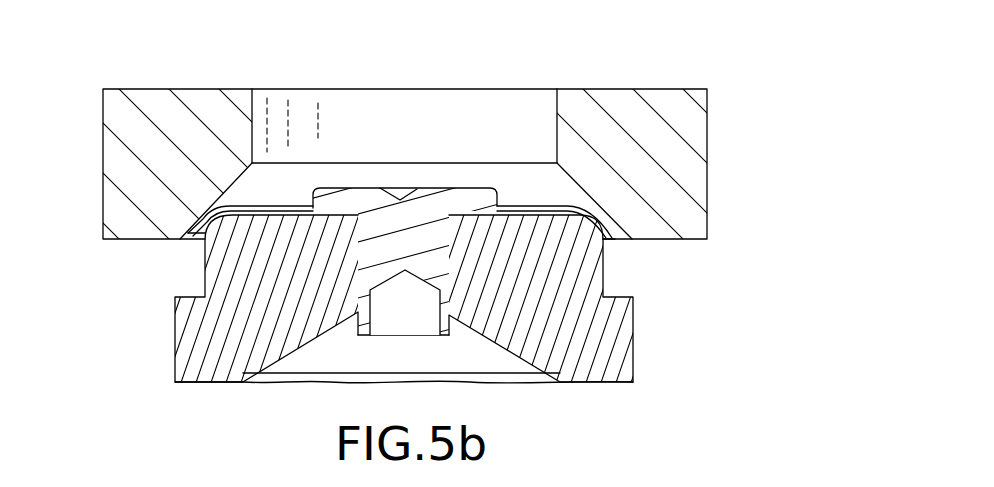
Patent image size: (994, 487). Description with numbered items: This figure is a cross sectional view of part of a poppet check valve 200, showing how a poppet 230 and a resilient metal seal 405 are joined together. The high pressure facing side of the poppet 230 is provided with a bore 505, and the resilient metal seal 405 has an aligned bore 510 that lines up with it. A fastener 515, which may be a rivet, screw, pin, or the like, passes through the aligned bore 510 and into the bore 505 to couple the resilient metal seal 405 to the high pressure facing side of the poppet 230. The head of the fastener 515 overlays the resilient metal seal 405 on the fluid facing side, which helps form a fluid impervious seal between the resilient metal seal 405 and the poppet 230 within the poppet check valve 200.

The poppet check valve 200 is at (745, 117).
The poppet 230 is at (232, 268).
The resilient metal seal 405 is at (589, 190).
The bore 505 is at (428, 220).
The aligned bore 510 is at (460, 227).
The fastener 515 is at (394, 258).